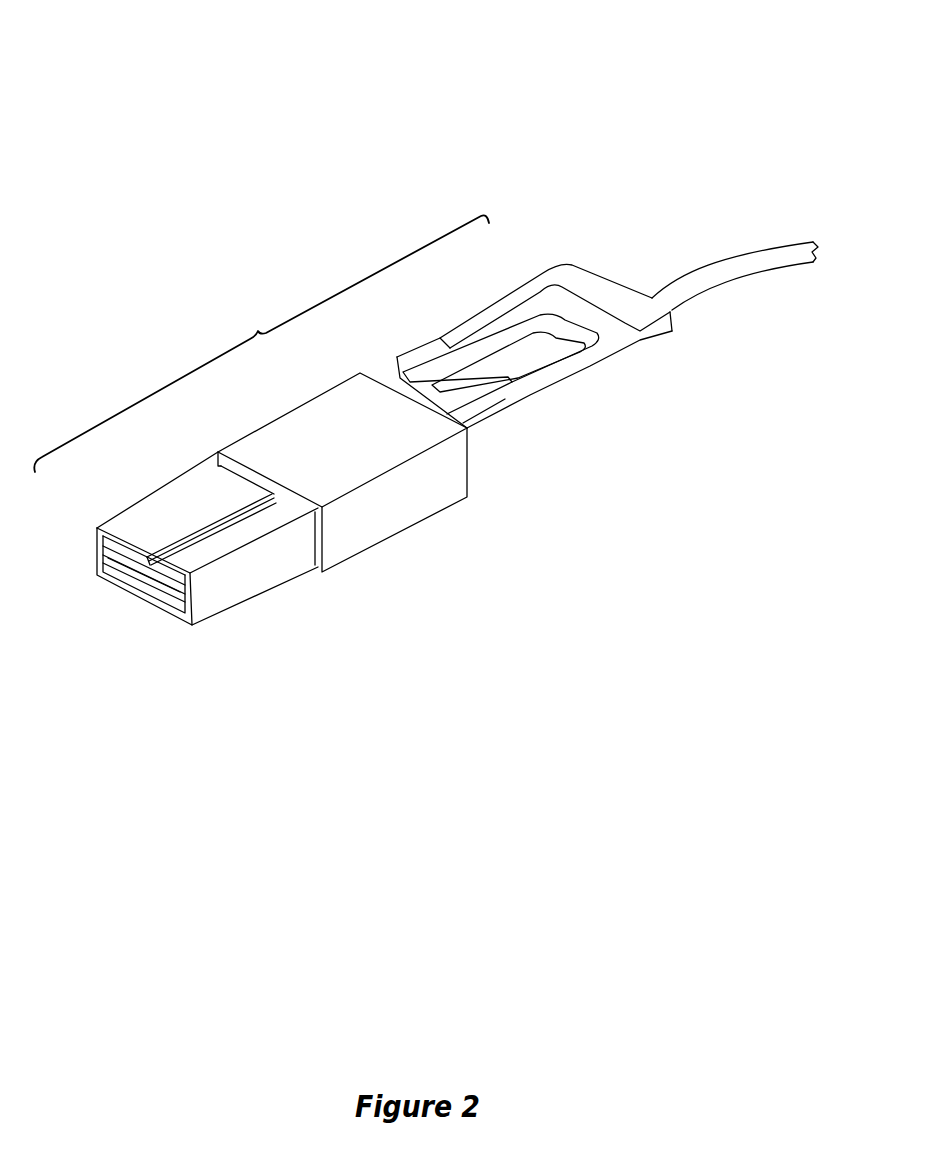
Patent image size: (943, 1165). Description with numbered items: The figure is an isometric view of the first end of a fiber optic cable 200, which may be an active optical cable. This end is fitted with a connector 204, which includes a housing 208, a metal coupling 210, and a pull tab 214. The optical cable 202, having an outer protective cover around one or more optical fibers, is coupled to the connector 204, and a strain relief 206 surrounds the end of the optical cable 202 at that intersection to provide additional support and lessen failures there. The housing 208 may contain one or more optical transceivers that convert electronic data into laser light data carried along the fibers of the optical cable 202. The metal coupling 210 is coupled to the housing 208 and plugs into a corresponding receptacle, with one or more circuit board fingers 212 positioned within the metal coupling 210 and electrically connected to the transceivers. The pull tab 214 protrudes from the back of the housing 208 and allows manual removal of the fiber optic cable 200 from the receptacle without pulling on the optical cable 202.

The fiber optic cable 200 is at (92, 40).
The optical cable 202 is at (712, 271).
The connector 204 is at (261, 343).
The strain relief 206 is at (466, 394).
The housing 208 is at (312, 417).
The metal coupling 210 is at (182, 498).
The circuit board finger 212 is at (143, 578).
The pull tab 214 is at (545, 289).